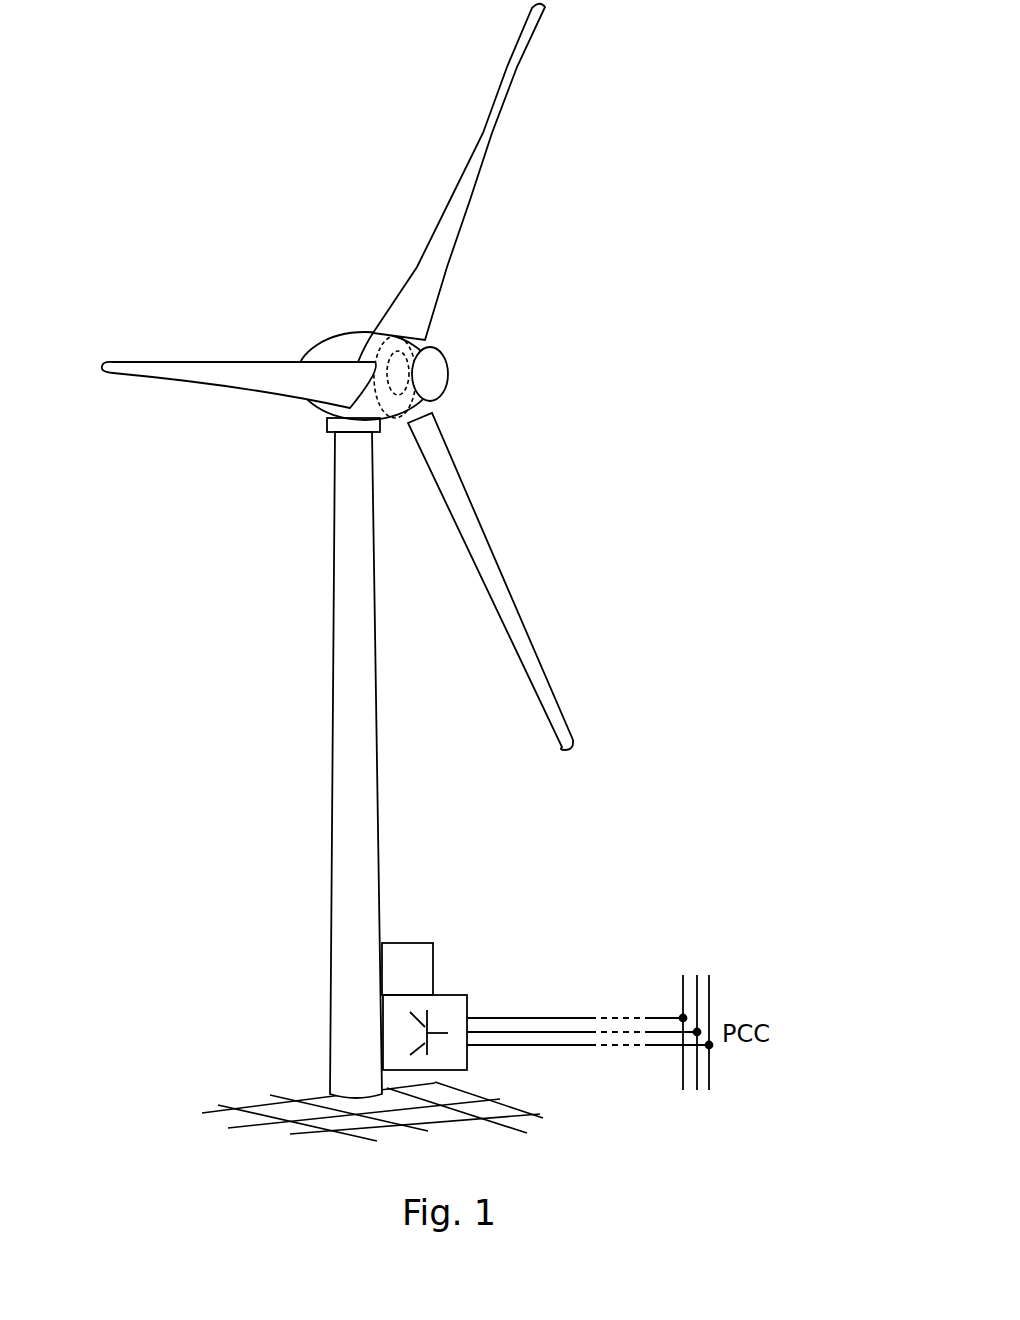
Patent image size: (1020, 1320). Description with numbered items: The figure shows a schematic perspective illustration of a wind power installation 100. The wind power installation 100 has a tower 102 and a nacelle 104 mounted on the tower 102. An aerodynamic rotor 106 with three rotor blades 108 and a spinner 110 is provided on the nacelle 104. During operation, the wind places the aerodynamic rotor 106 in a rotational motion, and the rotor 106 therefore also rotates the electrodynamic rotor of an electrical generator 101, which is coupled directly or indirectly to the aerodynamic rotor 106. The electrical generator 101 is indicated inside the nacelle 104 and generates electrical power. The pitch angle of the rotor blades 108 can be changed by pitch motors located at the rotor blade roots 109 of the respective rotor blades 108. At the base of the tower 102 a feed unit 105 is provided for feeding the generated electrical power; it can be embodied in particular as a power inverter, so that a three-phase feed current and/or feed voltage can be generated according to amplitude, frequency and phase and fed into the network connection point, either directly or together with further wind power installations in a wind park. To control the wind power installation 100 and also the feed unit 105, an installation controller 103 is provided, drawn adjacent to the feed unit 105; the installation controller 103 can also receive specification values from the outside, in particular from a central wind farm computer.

The wind power installation 100 is at (283, 519).
The electrical generator 101 is at (402, 335).
The tower 102 is at (363, 765).
The installation controller 103 is at (432, 967).
The nacelle 104 is at (347, 353).
The feed unit 105 is at (467, 1055).
The aerodynamic rotor 106 is at (379, 377).
The rotor blades 108 is at (487, 135).
The rotor blade roots 109 is at (440, 420).
The spinner 110 is at (433, 372).